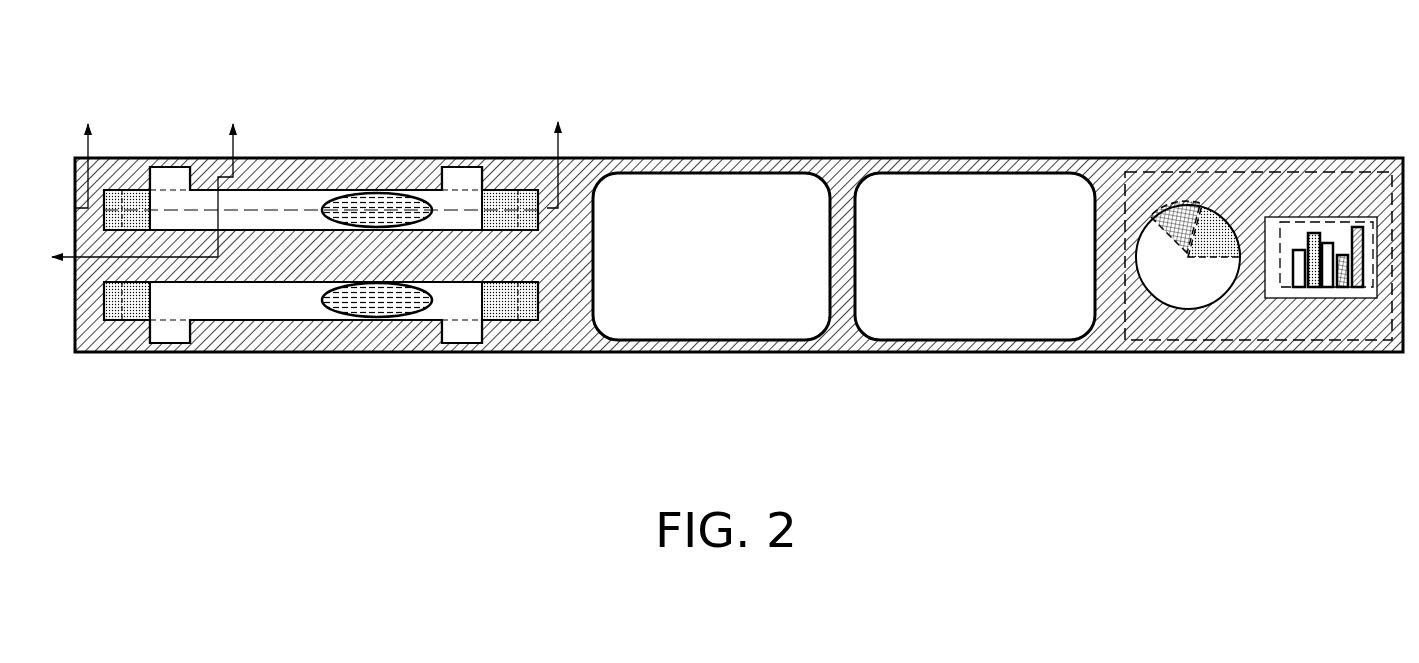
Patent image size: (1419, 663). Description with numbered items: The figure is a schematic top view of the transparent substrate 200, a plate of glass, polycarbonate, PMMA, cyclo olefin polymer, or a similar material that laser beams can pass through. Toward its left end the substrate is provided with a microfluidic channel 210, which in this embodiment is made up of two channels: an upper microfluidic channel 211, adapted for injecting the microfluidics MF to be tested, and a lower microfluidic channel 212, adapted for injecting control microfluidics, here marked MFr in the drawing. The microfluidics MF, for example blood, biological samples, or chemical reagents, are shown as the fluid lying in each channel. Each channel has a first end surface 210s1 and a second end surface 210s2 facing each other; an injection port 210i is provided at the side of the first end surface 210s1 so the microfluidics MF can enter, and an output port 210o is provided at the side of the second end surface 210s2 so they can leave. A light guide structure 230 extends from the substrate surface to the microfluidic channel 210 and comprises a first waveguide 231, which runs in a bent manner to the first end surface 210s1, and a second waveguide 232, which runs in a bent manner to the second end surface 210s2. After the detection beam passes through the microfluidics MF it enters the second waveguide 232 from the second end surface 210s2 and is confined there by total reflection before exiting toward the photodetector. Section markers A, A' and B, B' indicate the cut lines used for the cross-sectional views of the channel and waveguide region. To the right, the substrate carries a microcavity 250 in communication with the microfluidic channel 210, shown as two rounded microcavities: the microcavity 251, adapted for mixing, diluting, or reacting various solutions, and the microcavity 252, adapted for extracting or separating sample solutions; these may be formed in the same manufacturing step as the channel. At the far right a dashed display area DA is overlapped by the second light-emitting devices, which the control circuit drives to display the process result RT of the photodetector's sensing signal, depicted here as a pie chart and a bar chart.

The transparent substrate 200 is at (843, 170).
The microfluidic channel 210 is at (321, 257).
The microfluidic channel 211 is at (300, 196).
The microfluidic channel 212 is at (300, 296).
The output port 210o is at (168, 176).
The injection port 210i is at (461, 176).
The first end surface 210s1 is at (476, 302).
The second end surface 210s2 is at (153, 300).
The light guide structure 230 is at (311, 324).
The first waveguide 231 is at (500, 312).
The second waveguide 232 is at (134, 310).
The microcavity 250 is at (844, 213).
The microcavity 251 is at (713, 205).
The microcavity 252 is at (977, 205).
The microfluidics MF is at (377, 196).
The returned magnetic fluid MFr is at (367, 310).
The display area DA is at (1258, 257).
The process result RT is at (1283, 302).
The section line A is at (85, 151).
The section line A' is at (559, 149).
The section line B is at (125, 259).
The section line B' is at (233, 175).